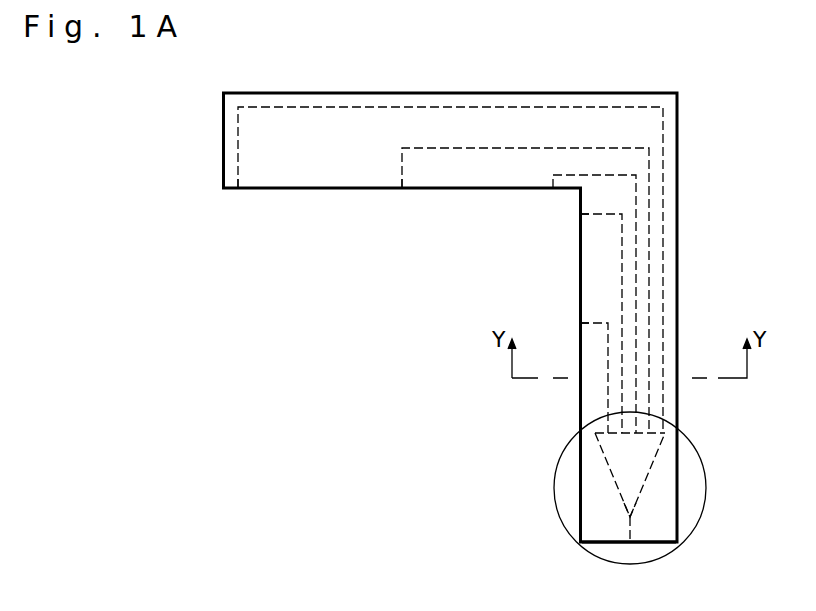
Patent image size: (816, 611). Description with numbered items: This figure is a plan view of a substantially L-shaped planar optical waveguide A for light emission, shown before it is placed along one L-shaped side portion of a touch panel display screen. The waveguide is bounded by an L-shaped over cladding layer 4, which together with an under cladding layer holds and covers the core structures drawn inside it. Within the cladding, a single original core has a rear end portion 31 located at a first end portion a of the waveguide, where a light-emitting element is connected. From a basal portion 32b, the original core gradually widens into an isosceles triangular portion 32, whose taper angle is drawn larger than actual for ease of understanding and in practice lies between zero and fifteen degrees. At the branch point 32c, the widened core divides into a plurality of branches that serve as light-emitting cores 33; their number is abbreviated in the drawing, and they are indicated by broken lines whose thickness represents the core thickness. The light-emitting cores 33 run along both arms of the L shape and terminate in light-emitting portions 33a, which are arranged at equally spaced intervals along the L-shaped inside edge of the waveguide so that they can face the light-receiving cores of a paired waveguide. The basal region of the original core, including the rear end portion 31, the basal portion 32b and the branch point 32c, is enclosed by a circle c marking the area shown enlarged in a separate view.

The substantially L-shaped planar optical waveguide for light emission A is at (219, 146).
The over cladding layer 4 is at (670, 190).
The light-emitting cores 33 is at (595, 173).
The light-emitting portions 33a is at (238, 189).
The isosceles triangular portion 32 is at (637, 472).
The basal portion 32b is at (630, 517).
The branch point 32c is at (595, 433).
The rear end portion 31 is at (632, 527).
The circle c is at (697, 448).
The first end portion a is at (643, 542).